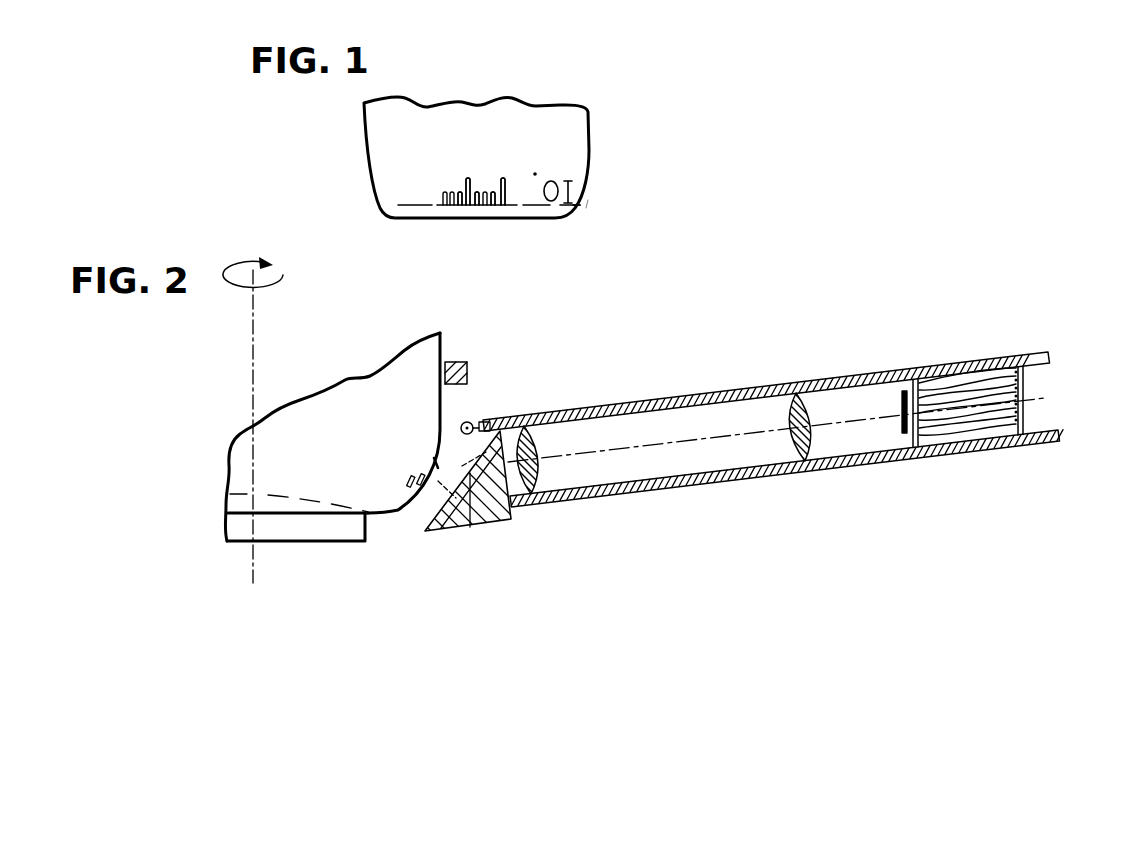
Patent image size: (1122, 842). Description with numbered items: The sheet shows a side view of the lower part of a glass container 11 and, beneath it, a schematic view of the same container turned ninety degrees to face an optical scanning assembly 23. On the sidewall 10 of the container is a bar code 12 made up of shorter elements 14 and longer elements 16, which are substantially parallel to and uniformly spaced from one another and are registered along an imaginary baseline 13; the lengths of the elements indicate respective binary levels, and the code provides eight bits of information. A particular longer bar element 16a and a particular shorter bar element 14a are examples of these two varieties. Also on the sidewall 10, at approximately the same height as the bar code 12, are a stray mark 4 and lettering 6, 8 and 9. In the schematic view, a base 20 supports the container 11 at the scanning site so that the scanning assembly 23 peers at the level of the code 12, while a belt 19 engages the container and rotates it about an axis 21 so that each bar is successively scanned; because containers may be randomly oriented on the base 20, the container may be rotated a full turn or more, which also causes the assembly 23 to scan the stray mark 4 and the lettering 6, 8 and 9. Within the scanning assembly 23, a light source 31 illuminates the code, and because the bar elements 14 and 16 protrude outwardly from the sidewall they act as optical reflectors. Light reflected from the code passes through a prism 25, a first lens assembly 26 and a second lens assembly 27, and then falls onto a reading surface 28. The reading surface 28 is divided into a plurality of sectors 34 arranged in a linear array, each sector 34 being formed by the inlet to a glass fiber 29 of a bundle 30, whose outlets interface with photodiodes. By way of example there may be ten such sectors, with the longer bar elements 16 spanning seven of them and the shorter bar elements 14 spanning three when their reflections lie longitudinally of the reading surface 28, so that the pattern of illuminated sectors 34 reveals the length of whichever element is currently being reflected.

In FIG. 1, the stray mark 4 is at (536, 174).
In FIG. 1, the lettering 6 is at (553, 208).
In FIG. 1, the lettering 8 is at (568, 208).
In FIG. 1, the lettering 9 is at (578, 198).
In FIG. 1, the sidewall 10 is at (570, 130).
In FIG. 2, the sidewall 10 is at (357, 372).
In FIG. 1, the glass container 11 is at (596, 205).
In FIG. 1, the bar code 12 is at (470, 165).
In FIG. 2, the bar code 12 is at (412, 458).
In FIG. 1, the imaginary baseline 13 is at (403, 208).
In FIG. 1, the shorter elements 14 is at (490, 208).
In FIG. 1, the shorter bar element 14a is at (503, 208).
In FIG. 1, the longer elements 16 is at (458, 208).
In FIG. 1, the longer bar element 16a is at (500, 178).
In FIG. 2, the belt 19 is at (470, 370).
In FIG. 2, the base 20 is at (363, 528).
In FIG. 2, the axis 21 is at (257, 352).
In FIG. 2, the optical scanning assembly 23 is at (667, 378).
In FIG. 2, the prism 25 is at (447, 530).
In FIG. 2, the first lens assembly 26 is at (540, 490).
In FIG. 2, the second lens assembly 27 is at (779, 478).
In FIG. 2, the reading surface 28 is at (888, 395).
In FIG. 2, the glass fiber 29 is at (966, 425).
In FIG. 2, the bundle 30 is at (997, 425).
In FIG. 2, the light source 31 is at (466, 420).
In FIG. 2, the sectors 34 is at (915, 450).